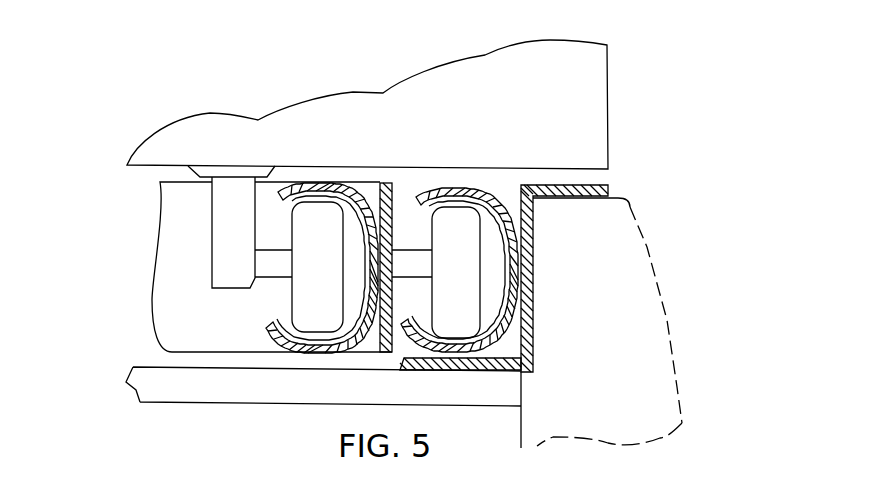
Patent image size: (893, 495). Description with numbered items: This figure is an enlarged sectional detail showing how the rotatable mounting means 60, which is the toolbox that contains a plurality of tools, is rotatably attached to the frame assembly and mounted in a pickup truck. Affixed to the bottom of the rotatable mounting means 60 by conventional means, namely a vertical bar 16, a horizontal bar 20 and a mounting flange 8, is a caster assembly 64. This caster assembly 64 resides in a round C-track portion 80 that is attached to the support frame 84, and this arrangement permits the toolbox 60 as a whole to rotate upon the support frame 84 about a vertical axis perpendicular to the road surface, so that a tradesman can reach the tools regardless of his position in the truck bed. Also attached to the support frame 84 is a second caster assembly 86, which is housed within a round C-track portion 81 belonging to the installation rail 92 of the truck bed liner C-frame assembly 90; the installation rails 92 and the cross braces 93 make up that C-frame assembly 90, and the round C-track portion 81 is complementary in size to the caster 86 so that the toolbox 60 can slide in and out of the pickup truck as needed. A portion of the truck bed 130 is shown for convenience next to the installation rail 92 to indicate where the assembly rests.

The mounting flange 8 is at (228, 173).
The vertical bar 16 is at (223, 218).
The horizontal bar 20 is at (273, 268).
The rotatable mounting means 60 is at (578, 92).
The caster assembly 64 is at (303, 268).
The round C-track portion 80 is at (270, 322).
The round C-track portion 81 is at (473, 193).
The support frame 84 is at (393, 186).
The caster assembly 86 is at (444, 268).
The truck bed liner C-frame assembly 90 is at (640, 187).
The installation rail 92 is at (609, 185).
The cross brace 93 is at (267, 387).
The truck bed 130 is at (623, 277).